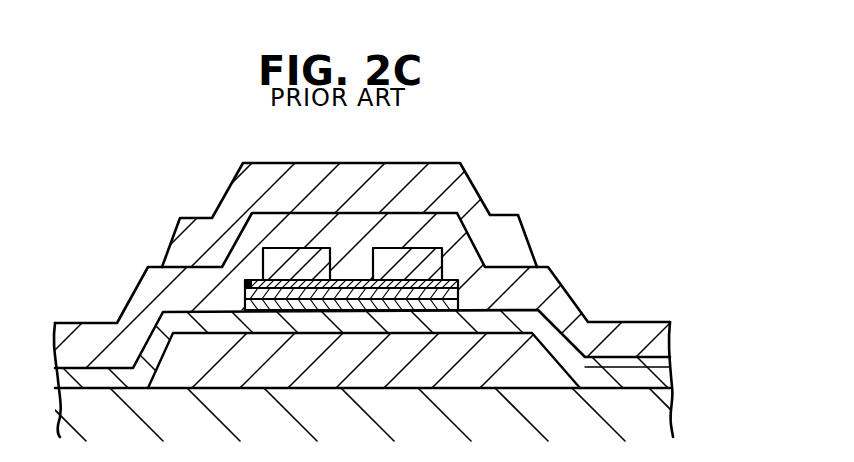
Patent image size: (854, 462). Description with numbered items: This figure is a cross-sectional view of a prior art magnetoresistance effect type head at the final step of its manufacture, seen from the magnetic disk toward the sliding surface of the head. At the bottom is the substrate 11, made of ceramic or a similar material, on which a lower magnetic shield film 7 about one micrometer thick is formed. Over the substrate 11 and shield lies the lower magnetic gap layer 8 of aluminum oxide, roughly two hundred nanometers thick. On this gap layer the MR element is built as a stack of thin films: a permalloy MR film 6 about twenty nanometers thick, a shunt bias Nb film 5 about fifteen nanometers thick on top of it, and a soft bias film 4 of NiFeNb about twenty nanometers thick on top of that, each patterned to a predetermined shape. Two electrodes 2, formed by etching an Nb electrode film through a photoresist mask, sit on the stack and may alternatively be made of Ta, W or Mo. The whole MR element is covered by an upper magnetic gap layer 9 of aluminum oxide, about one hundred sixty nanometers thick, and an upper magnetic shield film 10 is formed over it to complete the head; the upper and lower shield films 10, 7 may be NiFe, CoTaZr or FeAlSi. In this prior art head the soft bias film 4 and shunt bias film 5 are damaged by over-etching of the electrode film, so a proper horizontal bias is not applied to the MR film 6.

The electrodes 2 is at (383, 256).
The soft bias film 4 is at (455, 278).
The shunt bias film 5 is at (458, 291).
The MR film 6 is at (460, 301).
The lower magnetic shield film 7 is at (540, 372).
The lower magnetic gap layer 8 is at (655, 377).
The upper magnetic gap layer 9 is at (632, 337).
The upper magnetic shield film 10 is at (432, 176).
The substrate 11 is at (655, 416).